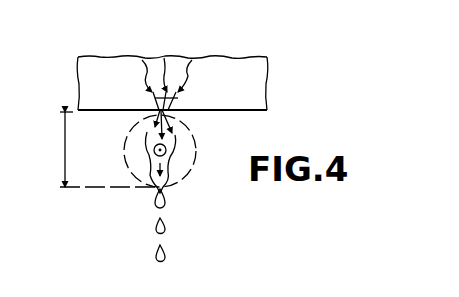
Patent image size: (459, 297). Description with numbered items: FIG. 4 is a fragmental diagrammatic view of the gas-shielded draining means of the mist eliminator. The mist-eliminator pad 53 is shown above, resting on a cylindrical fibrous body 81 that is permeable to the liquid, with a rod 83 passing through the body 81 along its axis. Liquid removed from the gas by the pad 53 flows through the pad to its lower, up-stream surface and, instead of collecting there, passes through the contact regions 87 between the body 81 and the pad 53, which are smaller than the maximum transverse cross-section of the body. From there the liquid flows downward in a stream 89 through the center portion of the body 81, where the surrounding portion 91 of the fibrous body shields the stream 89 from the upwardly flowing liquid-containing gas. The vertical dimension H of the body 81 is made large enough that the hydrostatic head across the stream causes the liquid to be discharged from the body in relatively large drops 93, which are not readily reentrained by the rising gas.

The pad 53 is at (250, 62).
The contact regions 87 is at (175, 102).
The portion of the fibrous body 91 is at (133, 163).
The stream 89 is at (175, 162).
The rod 83 is at (167, 148).
The fibrous body 81 is at (183, 180).
The drops 93 is at (165, 253).
The dimension of the body in the vertical direction H is at (108, 149).